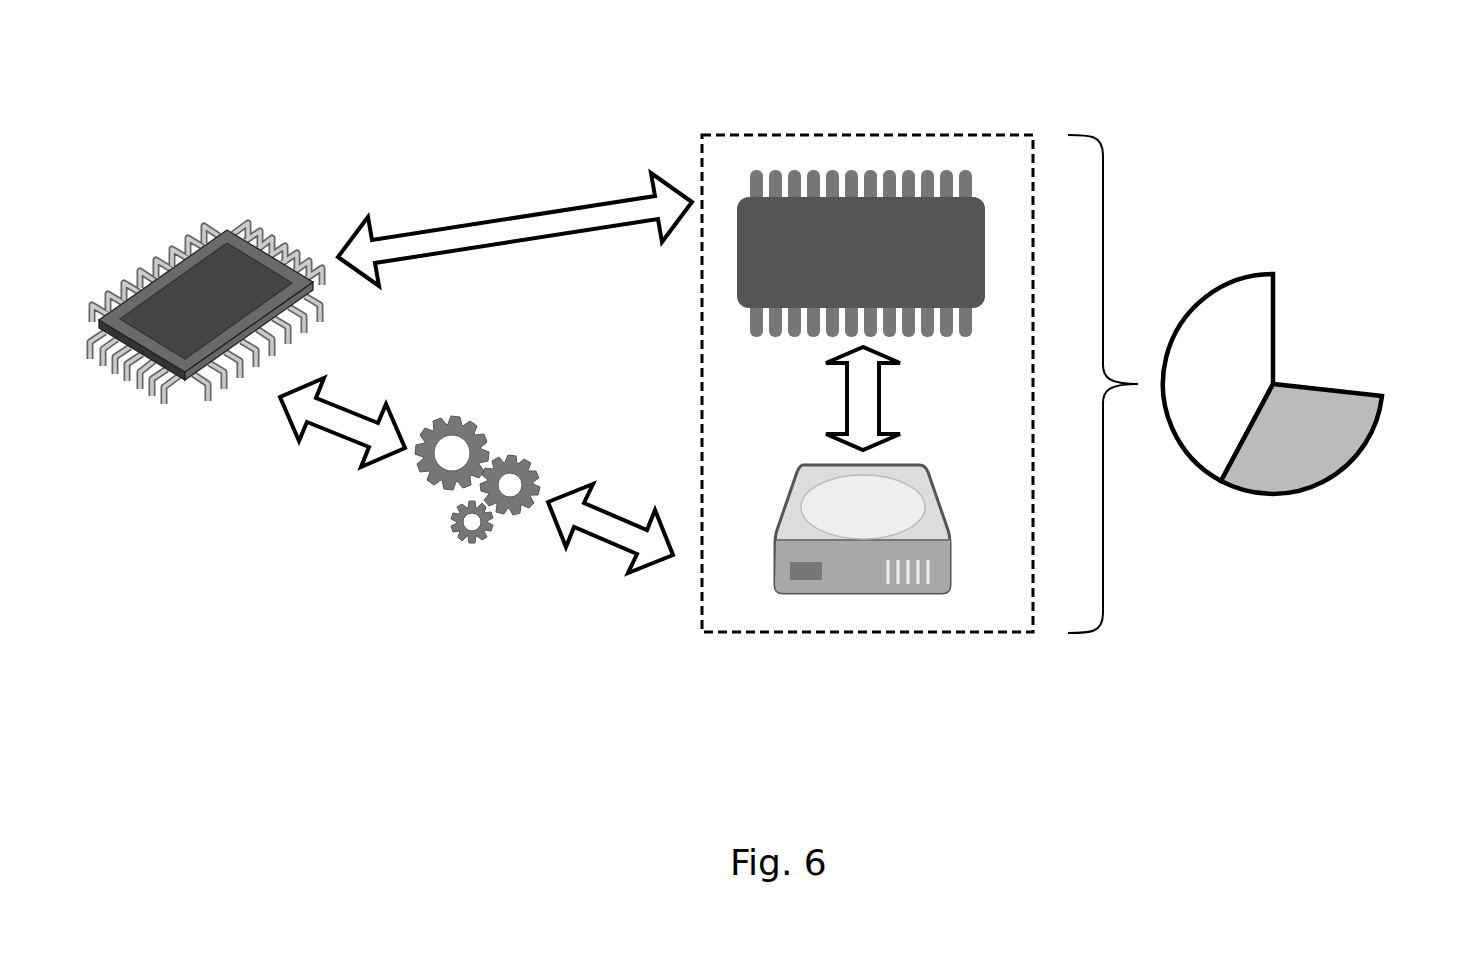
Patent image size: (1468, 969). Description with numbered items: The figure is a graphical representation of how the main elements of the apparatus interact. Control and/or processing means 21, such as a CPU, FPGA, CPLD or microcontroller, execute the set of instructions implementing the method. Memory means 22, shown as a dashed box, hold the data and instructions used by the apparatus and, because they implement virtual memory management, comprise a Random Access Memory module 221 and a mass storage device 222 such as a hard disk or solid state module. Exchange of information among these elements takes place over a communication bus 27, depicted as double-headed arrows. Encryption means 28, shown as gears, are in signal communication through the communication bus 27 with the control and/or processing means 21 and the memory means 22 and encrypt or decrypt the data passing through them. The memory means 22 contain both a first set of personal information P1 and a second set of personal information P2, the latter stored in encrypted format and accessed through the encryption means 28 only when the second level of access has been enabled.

The control and/or processing means 21 is at (226, 228).
The memory means 22 is at (870, 134).
The Random Access Memory (RAM) module 221 is at (962, 222).
The mass storage device 222 is at (862, 574).
The communication bus 27 is at (451, 242).
The encryption means 28 is at (463, 533).
The first set of personal information P1 is at (1218, 312).
The second set of personal information P2 is at (1317, 407).